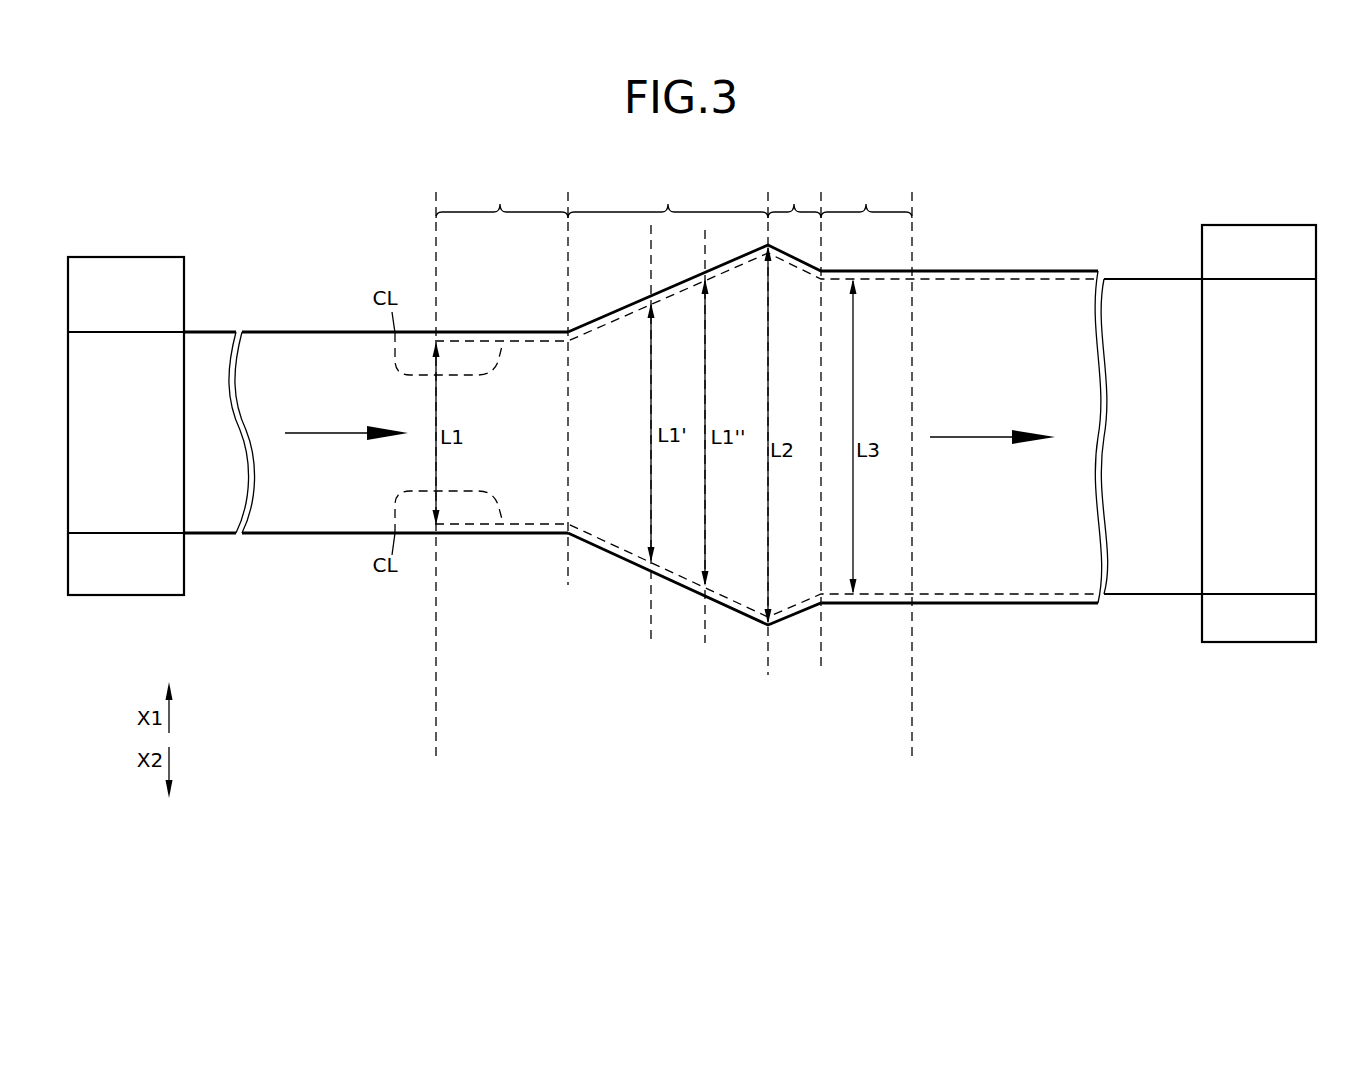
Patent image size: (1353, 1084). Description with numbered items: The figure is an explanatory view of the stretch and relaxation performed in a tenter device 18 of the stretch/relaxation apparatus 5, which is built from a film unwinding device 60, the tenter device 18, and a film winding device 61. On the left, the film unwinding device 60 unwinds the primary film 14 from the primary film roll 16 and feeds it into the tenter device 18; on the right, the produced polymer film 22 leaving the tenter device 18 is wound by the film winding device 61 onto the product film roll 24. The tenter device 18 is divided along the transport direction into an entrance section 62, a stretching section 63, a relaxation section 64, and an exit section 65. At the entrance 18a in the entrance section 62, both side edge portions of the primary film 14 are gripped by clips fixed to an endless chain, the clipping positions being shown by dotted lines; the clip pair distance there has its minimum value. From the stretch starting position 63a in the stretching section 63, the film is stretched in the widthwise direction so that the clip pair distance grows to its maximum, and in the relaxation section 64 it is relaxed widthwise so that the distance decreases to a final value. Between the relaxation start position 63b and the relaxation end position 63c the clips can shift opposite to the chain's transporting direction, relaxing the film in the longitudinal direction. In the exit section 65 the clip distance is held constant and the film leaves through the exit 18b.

The stretch/relaxation apparatus 5 is at (250, 791).
The primary film 14 is at (343, 518).
The primary film roll 16 is at (135, 348).
The tenter device 18 is at (912, 778).
The entrance 18a is at (436, 713).
The exit 18b is at (912, 718).
The polymer film 22 is at (970, 587).
The product film roll 24 is at (1243, 308).
The film unwinding device 60 is at (96, 590).
The film winding device 61 is at (1238, 635).
The entrance section 62 is at (501, 350).
The stretching section 63 is at (668, 454).
The stretch starting position 63a is at (568, 572).
The relaxation start position 63b is at (651, 617).
The relaxation end position 63c is at (705, 617).
The relaxation section 64 is at (793, 425).
The exit section 65 is at (866, 423).